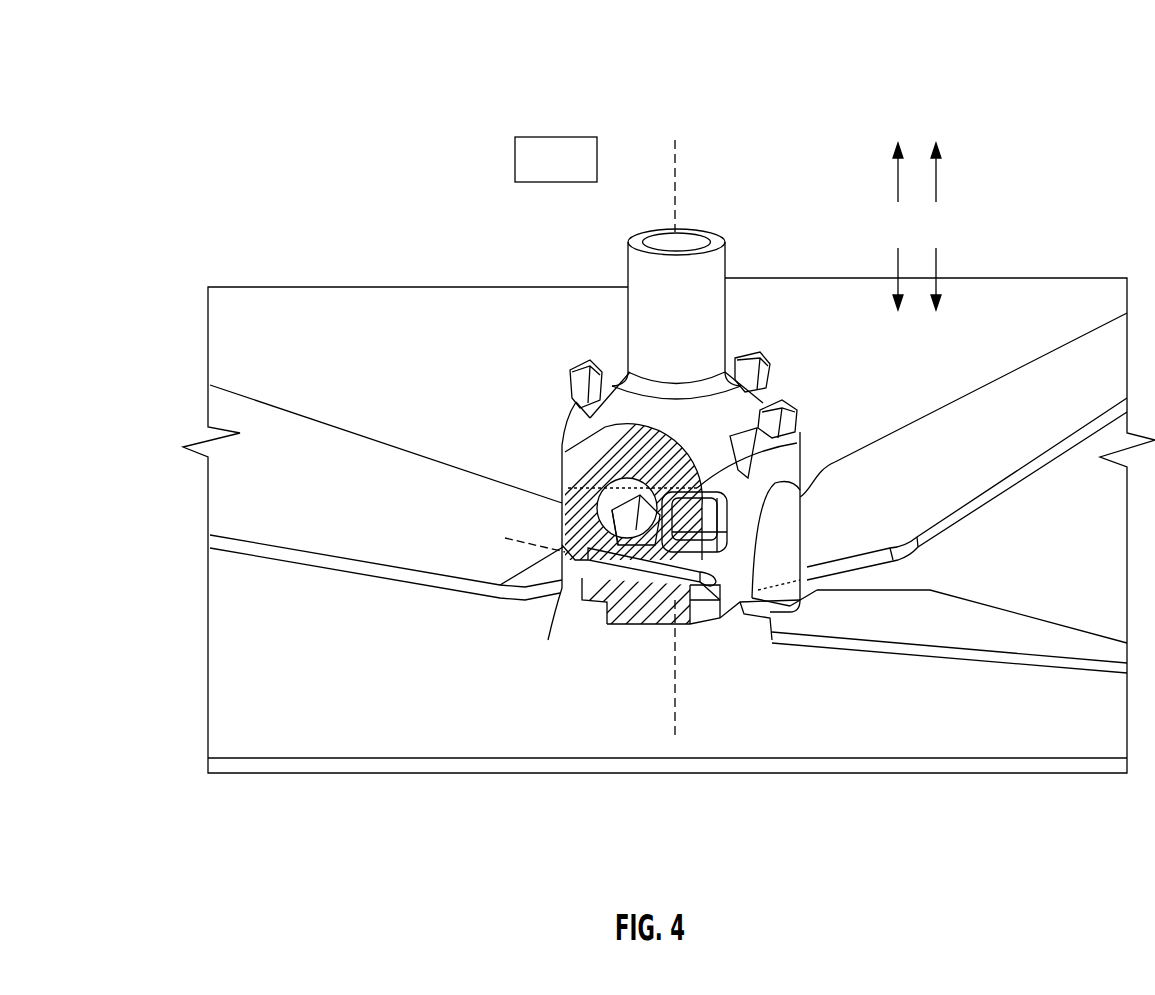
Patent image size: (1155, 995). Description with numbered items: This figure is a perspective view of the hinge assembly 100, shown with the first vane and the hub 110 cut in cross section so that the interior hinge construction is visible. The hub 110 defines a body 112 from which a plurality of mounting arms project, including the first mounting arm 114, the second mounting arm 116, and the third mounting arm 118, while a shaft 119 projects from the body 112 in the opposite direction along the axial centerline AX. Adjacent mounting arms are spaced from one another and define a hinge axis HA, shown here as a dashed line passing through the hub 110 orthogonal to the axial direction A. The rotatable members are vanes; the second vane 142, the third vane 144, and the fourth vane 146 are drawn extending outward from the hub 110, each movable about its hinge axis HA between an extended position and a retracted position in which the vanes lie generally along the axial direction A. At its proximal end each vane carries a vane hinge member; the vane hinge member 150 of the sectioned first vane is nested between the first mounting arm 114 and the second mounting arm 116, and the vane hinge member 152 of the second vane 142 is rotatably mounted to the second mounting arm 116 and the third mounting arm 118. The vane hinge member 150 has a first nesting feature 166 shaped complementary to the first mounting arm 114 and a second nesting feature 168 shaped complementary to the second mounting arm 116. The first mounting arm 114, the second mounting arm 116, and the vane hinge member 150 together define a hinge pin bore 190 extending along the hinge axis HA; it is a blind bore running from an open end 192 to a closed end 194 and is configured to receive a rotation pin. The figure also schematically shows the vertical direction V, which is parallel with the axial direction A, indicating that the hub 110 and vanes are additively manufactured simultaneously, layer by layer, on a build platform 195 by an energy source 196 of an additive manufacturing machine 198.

The hinge assembly 100 is at (455, 186).
The hub 110 is at (693, 534).
The body 112 is at (622, 410).
The first mounting arm 114 is at (567, 575).
The second mounting arm 116 is at (710, 600).
The third mounting arm 118 is at (800, 472).
The shaft 119 is at (714, 243).
The second vane 142 is at (1057, 637).
The third vane 144 is at (1008, 378).
The fourth vane 146 is at (380, 452).
The vane hinge member 150 is at (628, 600).
The vane hinge member 152 is at (807, 537).
The first nesting feature 166 is at (630, 575).
The second nesting feature 168 is at (630, 610).
The hinge pin bore 190 is at (640, 600).
The open end 192 is at (740, 620).
The closed end 194 is at (590, 548).
The build platform 195 is at (298, 738).
The energy source 196 is at (571, 172).
The additive manufacturing machine 198 is at (530, 96).
The hinge axis HA is at (515, 541).
The axial centerline AX is at (693, 440).
The vertical direction V is at (898, 226).
The axial direction A is at (936, 226).